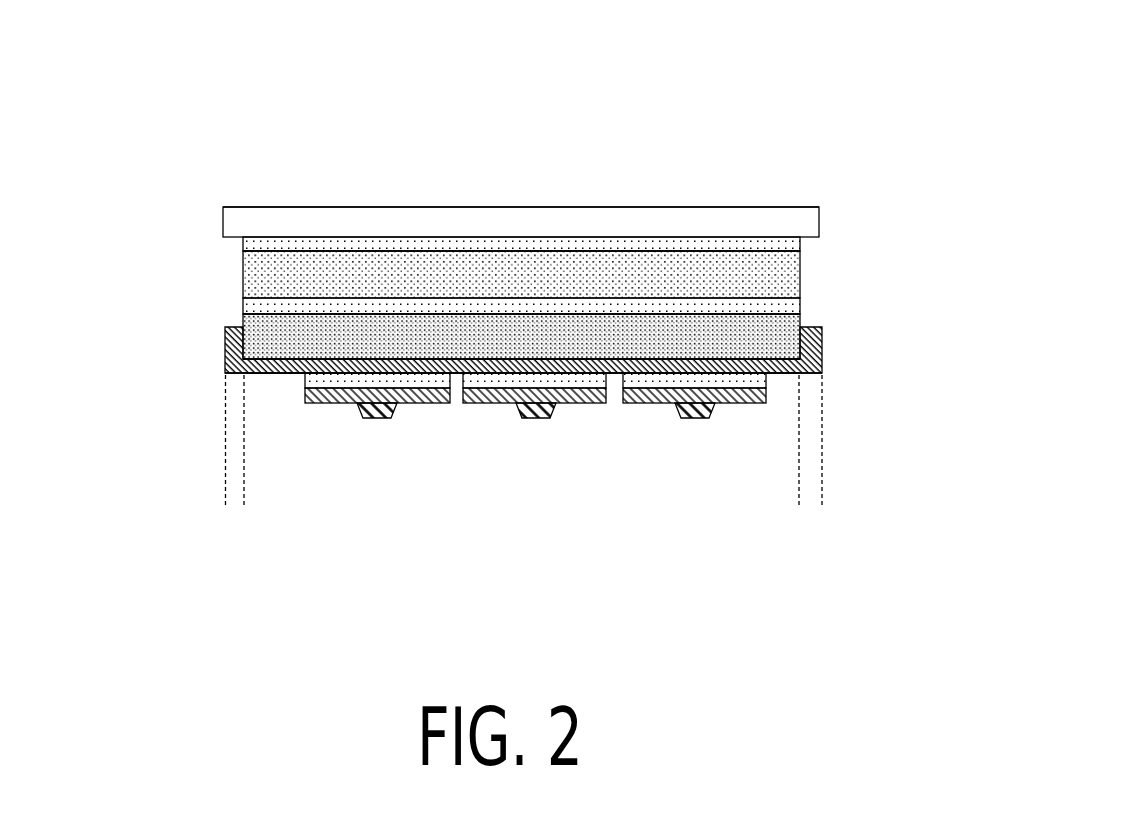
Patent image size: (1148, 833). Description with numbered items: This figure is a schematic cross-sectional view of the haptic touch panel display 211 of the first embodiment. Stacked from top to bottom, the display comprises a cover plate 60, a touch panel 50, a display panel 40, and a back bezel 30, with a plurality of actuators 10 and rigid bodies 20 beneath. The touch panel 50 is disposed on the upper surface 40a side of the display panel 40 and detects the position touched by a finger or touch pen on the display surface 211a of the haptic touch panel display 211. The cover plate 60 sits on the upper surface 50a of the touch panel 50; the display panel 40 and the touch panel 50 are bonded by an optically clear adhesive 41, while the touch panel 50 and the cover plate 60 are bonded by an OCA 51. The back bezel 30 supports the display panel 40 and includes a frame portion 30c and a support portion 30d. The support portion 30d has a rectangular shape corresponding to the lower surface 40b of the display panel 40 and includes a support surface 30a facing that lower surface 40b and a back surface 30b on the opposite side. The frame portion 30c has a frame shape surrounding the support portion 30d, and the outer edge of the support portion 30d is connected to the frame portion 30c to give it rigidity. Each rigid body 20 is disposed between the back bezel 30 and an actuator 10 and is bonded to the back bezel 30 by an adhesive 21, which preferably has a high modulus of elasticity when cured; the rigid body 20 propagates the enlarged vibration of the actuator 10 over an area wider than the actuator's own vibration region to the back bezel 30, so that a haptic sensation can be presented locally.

The haptic touch panel display 211 is at (874, 100).
The display surface 211a is at (526, 198).
The cover plate 60 is at (236, 222).
The OCA 51 is at (243, 245).
The touch panel 50 is at (243, 284).
The upper surface of the touch panel 50a is at (311, 243).
The OCA 41 is at (243, 305).
The display panel 40 is at (226, 337).
The upper surface of the display panel 40a is at (411, 303).
The lower surface of the display panel 40b is at (435, 368).
The back bezel 30 is at (822, 563).
The support surface 30a is at (680, 349).
The back surface 30b is at (612, 388).
The frame portion 30c is at (244, 507).
The support portion 30d is at (797, 507).
The adhesive 21 is at (305, 382).
The rigid body 20 is at (305, 397).
The actuator 10 is at (355, 420).